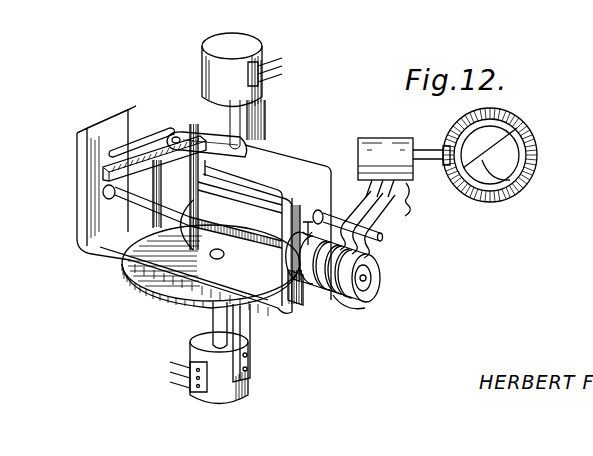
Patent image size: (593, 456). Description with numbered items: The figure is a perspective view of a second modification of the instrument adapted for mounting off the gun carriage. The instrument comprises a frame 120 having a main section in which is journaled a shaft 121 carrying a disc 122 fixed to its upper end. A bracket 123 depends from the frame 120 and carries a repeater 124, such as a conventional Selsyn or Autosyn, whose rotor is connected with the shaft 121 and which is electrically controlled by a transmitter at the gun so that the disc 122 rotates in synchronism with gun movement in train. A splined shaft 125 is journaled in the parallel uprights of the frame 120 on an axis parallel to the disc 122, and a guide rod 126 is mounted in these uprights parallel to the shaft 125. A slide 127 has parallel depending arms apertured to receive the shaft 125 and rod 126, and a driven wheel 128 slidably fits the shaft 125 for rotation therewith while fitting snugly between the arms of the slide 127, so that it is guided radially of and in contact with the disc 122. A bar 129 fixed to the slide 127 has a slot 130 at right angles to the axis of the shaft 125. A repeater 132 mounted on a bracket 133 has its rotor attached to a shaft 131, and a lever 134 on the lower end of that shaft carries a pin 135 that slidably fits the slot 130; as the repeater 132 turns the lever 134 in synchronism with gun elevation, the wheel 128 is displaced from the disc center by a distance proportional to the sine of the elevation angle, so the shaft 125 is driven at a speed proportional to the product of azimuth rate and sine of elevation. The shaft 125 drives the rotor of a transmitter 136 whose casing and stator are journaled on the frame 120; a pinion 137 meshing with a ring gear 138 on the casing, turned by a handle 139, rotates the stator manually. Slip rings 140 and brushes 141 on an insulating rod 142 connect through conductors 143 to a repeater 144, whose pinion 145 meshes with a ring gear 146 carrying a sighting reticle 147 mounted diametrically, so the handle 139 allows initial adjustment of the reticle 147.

The frame 120 is at (107, 243).
The shaft 121 is at (214, 320).
The disc 122 is at (132, 282).
The bracket 123 is at (248, 340).
The repeater 124 is at (223, 388).
The splined shaft 125 is at (260, 246).
The guide rod 126 is at (257, 202).
The slide 127 is at (112, 198).
The driven wheel 128 is at (188, 242).
The bar 129 is at (213, 118).
The slot 130 is at (118, 164).
The shaft 131 is at (165, 133).
The repeater 132 is at (250, 46).
The bracket 133 is at (264, 114).
The lever 134 is at (184, 134).
The pin 135 is at (162, 134).
The transmitter 136 is at (381, 284).
The pinion 137 is at (290, 243).
The ring gear 138 is at (308, 294).
The handle 139 is at (308, 220).
The slip rings 140 is at (342, 307).
The brushes 141 is at (381, 241).
The insulating rod 142 is at (392, 238).
The conductors 143 is at (366, 214).
The repeater 144 is at (380, 147).
The pinion 145 is at (443, 168).
The ring gear 146 is at (521, 132).
The sighting reticle 147 is at (523, 181).